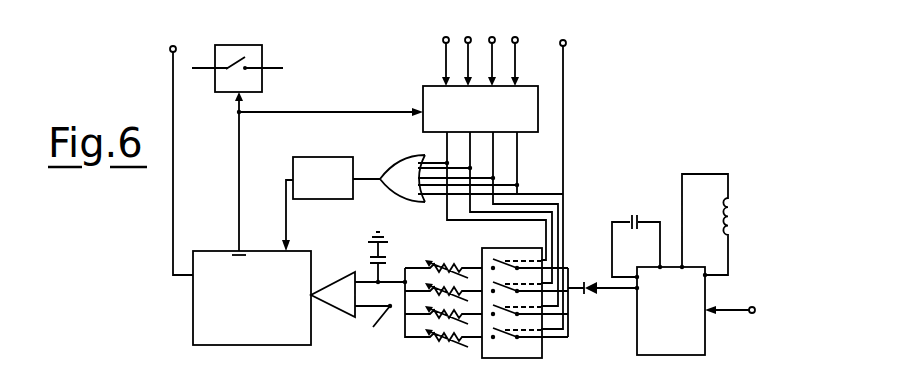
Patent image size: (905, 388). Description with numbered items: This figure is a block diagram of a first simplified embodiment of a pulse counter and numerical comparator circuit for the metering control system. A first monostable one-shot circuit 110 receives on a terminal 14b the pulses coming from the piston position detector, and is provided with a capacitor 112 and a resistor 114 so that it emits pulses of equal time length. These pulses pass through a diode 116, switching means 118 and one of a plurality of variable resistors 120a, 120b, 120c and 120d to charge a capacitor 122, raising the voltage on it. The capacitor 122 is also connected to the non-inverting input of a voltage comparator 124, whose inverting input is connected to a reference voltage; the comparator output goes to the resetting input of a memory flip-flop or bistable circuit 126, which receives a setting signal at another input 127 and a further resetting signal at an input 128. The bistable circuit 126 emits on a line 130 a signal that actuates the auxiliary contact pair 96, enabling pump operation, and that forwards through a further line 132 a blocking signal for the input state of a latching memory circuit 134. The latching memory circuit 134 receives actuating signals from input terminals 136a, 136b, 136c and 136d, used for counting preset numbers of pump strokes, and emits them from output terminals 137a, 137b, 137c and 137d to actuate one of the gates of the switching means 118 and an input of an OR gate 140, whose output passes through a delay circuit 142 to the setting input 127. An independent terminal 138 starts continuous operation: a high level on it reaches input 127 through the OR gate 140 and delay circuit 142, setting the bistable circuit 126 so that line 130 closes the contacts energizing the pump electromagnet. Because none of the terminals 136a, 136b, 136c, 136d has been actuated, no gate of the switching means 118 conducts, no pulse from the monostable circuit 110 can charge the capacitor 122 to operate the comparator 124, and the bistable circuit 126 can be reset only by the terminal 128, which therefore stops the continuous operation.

The auxiliary contact pair 96 is at (262, 48).
The resetting input / independent stop terminal 128 is at (173, 193).
The output line 130 is at (239, 188).
The further line 132 is at (350, 110).
The latching memory circuit 134 is at (423, 104).
The input terminal 136a is at (443, 62).
The input terminal 136b is at (463, 48).
The input terminal 136c is at (490, 50).
The input terminal 136d is at (518, 48).
The independent start terminal 138 is at (563, 52).
The output terminal 137a is at (470, 147).
The output terminal 137b is at (447, 155).
The output terminal 137c is at (472, 146).
The output terminal 137d is at (517, 138).
The OR gate 140 is at (400, 158).
The delay circuit 142 is at (338, 157).
The setting or actuating input 127 is at (287, 214).
The memory flip-flop or bistable circuit 126 is at (277, 345).
The voltage comparator 124 is at (337, 310).
The capacitor 122 is at (370, 258).
The variable resistor 120a is at (453, 261).
The variable resistor 120b is at (420, 288).
The variable resistor 120c is at (423, 322).
The variable resistor 120d is at (445, 342).
The switching means 118 is at (543, 349).
The diode 116 is at (586, 280).
The monostable one-shot circuit 110 is at (645, 355).
The capacitor 112 is at (637, 215).
The resistor 114 is at (731, 217).
The terminal 14b is at (736, 312).